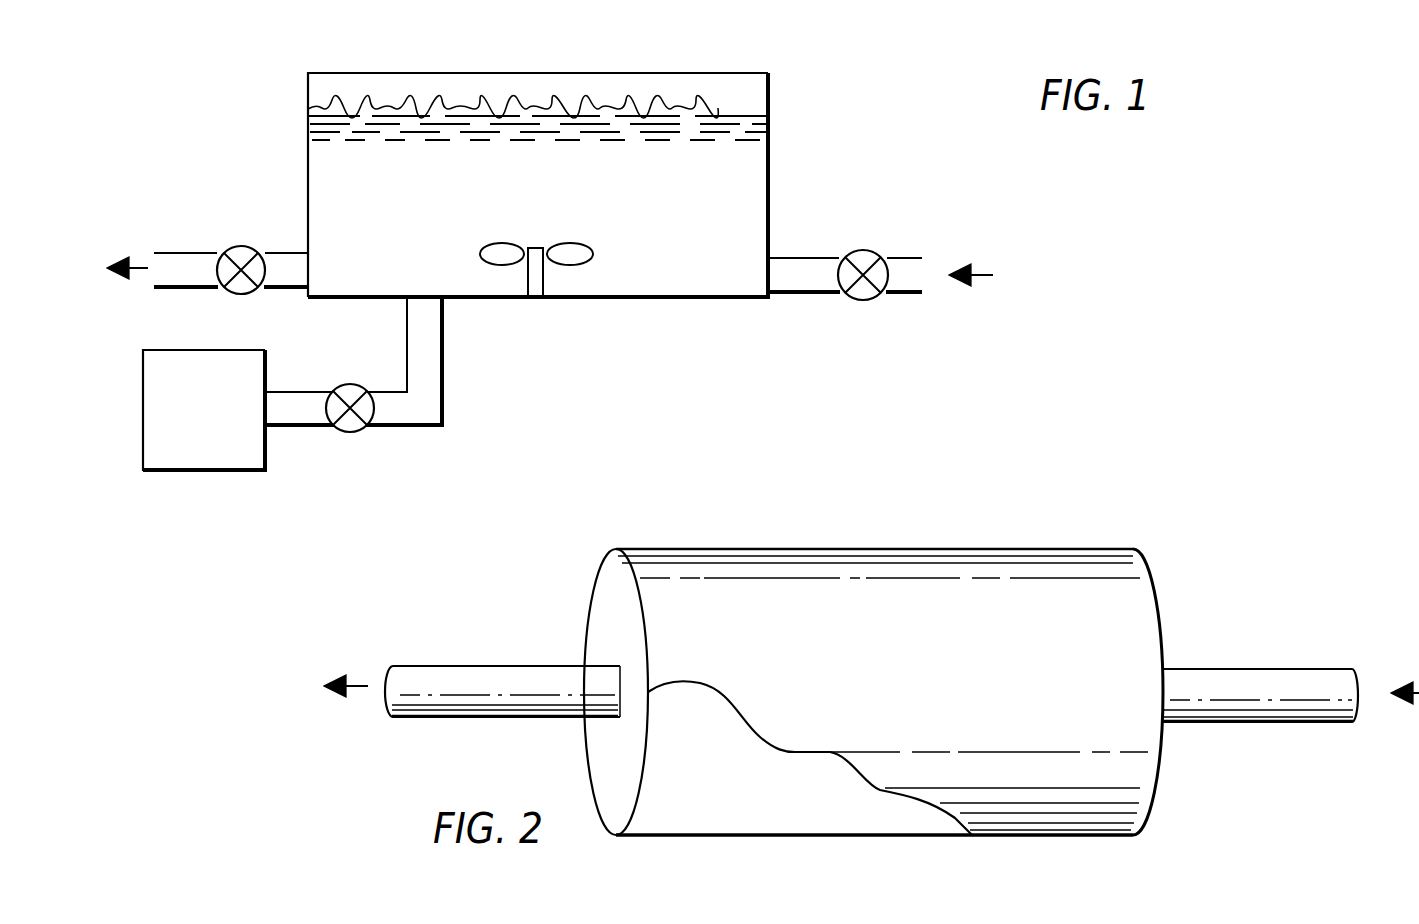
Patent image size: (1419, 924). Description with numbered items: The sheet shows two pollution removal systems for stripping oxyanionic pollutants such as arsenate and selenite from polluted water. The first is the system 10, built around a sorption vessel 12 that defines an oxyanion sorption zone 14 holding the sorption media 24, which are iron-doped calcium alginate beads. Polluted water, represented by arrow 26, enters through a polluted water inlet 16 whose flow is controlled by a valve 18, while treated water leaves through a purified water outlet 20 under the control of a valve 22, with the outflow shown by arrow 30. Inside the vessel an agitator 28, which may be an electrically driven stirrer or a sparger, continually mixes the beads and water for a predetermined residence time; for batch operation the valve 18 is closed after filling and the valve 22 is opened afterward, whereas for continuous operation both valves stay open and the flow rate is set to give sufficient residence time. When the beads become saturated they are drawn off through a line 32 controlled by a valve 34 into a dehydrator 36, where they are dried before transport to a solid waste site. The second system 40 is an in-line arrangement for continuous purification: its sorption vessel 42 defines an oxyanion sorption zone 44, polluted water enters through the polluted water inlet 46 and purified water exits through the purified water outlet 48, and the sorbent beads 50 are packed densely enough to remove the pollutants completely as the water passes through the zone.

In FIG. 1, the pollution removal system 10 is at (850, 146).
In FIG. 1, the sorption vessel 12 is at (770, 228).
In FIG. 1, the oxyanion sorption zone 14 is at (401, 183).
In FIG. 1, the polluted water inlet 16 is at (805, 293).
In FIG. 1, the valve 18 is at (863, 250).
In FIG. 1, the purified water outlet 20 is at (190, 289).
In FIG. 1, the valve 22 is at (241, 246).
In FIG. 1, the sorption media 24 is at (718, 185).
In FIG. 1, the arrow 26 is at (977, 275).
In FIG. 1, the agitator 28 is at (570, 254).
In FIG. 1, the arrow 30 is at (130, 268).
In FIG. 1, the line 32 is at (443, 360).
In FIG. 1, the valve 34 is at (348, 432).
In FIG. 1, the dehydrator 36 is at (202, 471).
In FIG. 2, the alternate purification system 40 is at (1064, 492).
In FIG. 2, the sorption vessel 42 is at (870, 548).
In FIG. 2, the oxyanion sorption zone 44 is at (780, 785).
In FIG. 2, the polluted water inlet 46 is at (1253, 723).
In FIG. 2, the purified water outlet 48 is at (470, 676).
In FIG. 2, the iron-doped calcium alginate beads 50 is at (695, 815).